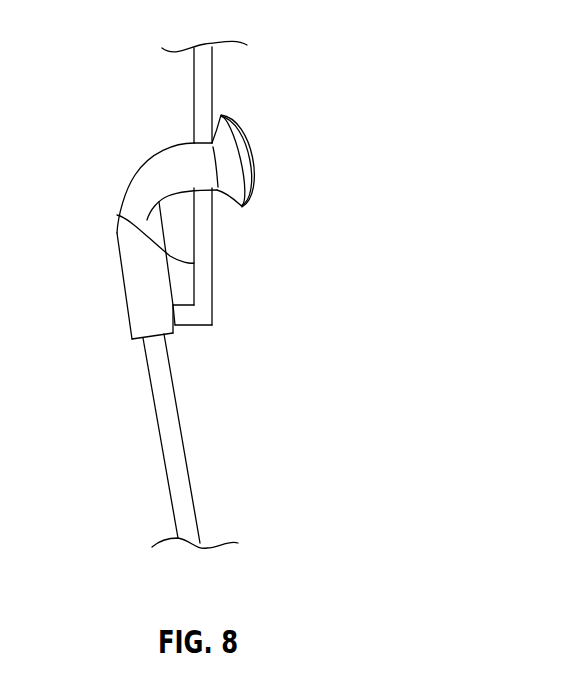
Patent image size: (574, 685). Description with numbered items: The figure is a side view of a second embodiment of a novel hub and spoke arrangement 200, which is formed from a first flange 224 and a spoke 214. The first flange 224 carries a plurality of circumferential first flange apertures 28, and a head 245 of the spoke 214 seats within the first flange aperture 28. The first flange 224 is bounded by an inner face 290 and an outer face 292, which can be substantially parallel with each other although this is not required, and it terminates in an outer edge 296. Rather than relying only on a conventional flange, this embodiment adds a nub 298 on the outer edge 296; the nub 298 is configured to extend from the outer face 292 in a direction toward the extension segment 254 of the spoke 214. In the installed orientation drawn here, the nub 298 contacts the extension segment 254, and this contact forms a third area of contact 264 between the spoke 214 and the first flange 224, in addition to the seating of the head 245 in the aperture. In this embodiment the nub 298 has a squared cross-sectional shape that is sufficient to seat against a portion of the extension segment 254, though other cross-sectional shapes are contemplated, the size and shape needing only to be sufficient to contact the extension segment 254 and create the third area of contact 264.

The hub and spoke arrangement 200 is at (368, 60).
The first flange 224 is at (213, 80).
The first flange aperture 28 is at (193, 143).
The head 245 is at (251, 160).
The outer face 292 is at (117, 215).
The inner face 290 is at (212, 270).
The third area of contact 264 is at (177, 323).
The extension segment 254 is at (125, 300).
The nub 298 is at (184, 332).
The outer edge 296 is at (202, 327).
The spoke 214 is at (160, 437).